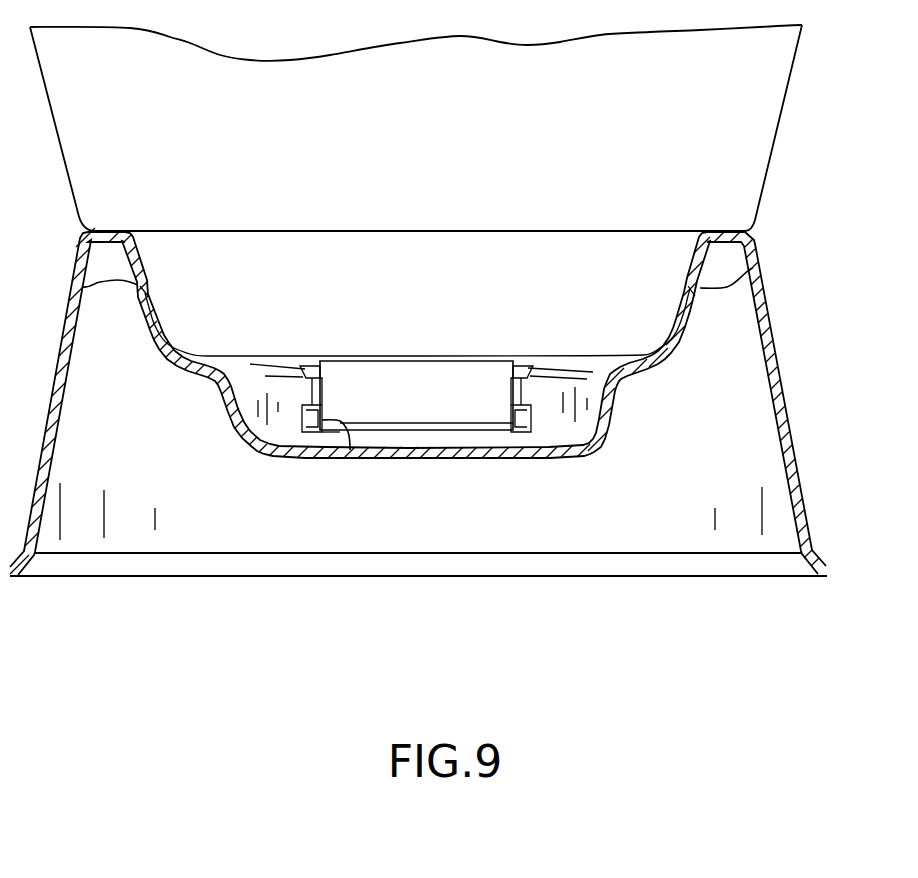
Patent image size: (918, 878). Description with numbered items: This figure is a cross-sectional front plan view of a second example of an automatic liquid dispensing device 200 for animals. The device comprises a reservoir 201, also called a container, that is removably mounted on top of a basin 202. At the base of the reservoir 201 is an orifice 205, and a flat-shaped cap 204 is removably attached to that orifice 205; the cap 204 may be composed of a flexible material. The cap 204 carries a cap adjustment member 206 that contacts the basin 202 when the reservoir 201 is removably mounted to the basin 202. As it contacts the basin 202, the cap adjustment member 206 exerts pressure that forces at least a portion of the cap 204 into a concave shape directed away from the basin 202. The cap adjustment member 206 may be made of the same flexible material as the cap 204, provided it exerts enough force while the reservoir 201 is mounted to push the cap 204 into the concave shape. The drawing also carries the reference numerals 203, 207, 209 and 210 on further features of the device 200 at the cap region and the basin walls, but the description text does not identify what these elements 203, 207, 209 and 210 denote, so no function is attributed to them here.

The automatic liquid dispensing device 200 is at (445, 321).
The reservoir 201 is at (765, 160).
The basin 202 is at (775, 335).
The insert element 203 is at (490, 440).
The cap 204 is at (307, 418).
The orifice 205 is at (520, 413).
The cap adjustment member 206 is at (312, 417).
The pad layer 207 is at (433, 440).
The bead 209 is at (83, 287).
The side wall 210 is at (145, 288).